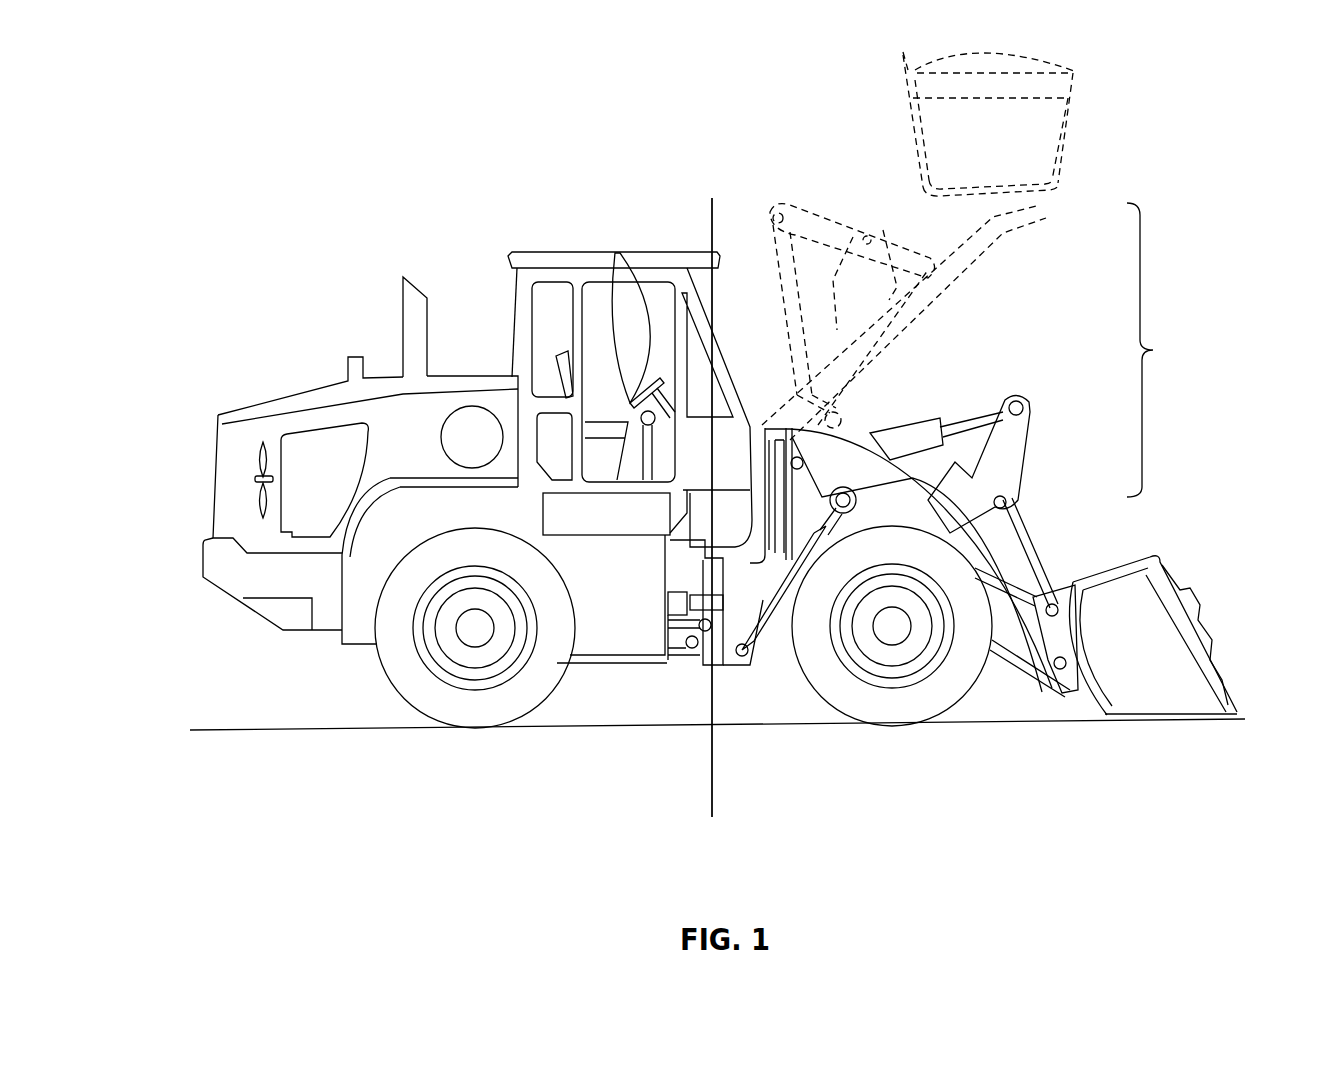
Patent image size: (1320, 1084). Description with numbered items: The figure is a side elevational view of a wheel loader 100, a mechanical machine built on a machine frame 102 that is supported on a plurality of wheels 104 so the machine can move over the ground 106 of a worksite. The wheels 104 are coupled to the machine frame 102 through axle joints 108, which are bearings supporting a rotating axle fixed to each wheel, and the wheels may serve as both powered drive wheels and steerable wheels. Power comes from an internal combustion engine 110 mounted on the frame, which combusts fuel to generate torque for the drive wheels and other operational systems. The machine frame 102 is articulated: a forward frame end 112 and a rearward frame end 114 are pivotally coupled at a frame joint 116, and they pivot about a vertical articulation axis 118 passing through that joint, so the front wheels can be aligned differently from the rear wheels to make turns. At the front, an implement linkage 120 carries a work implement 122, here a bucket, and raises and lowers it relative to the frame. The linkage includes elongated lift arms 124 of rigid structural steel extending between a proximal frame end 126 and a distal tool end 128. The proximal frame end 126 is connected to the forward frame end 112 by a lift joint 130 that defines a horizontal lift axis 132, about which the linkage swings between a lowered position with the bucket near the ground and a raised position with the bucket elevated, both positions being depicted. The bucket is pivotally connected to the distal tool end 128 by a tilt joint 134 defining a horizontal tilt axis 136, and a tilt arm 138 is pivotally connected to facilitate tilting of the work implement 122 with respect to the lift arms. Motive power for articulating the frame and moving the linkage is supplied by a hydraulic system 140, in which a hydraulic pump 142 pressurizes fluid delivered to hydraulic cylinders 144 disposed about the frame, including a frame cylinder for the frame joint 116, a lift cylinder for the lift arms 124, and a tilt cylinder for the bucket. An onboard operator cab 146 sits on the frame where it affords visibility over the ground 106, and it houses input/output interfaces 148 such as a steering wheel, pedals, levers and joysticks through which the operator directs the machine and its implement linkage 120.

The wheel loader 100 is at (556, 138).
The machine frame 102 is at (490, 378).
The wheels 104 is at (461, 715).
The ground 106 is at (373, 728).
The axle joints 108 is at (472, 639).
The internal combustion engine 110 is at (308, 512).
The forward frame end 112 is at (775, 655).
The rearward frame end 114 is at (322, 628).
The frame joint 116 is at (697, 662).
The articulation axis 118 is at (712, 213).
The implement linkage 120 is at (1163, 350).
The work implement 122 is at (1173, 703).
The lift arms 124 is at (1000, 613).
The proximal frame end 126 is at (830, 467).
The distal tool end 128 is at (1050, 690).
The lift joint 130 is at (765, 615).
The lift axis 132 is at (742, 734).
The tilt joint 134 is at (1076, 695).
The tilt axis 136 is at (1078, 714).
The tilt arm 138 is at (1018, 468).
The hydraulic system 140 is at (430, 273).
The hydraulic pump 142 is at (453, 430).
The hydraulic cylinders 144 is at (673, 605).
The operator cab 146 is at (562, 260).
The input/output interfaces 148 is at (622, 225).